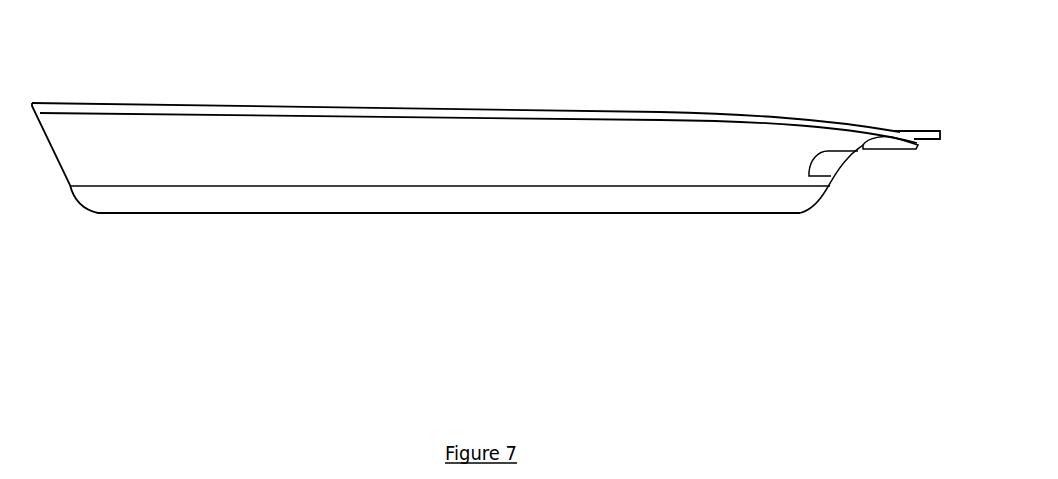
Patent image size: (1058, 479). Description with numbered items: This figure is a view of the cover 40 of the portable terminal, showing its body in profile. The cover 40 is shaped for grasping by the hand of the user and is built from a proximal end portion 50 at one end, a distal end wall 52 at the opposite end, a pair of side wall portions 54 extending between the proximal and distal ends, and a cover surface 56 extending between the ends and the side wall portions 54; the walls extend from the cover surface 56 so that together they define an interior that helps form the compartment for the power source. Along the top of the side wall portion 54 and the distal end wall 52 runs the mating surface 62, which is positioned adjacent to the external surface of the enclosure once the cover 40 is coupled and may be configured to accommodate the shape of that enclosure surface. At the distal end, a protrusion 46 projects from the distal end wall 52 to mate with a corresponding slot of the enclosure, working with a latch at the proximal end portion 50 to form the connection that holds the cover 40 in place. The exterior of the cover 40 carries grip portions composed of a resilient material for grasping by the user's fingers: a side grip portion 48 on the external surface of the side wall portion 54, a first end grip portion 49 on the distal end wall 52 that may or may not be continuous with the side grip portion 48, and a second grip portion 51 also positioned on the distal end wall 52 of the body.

The cover 40 is at (450, 235).
The protrusion 46 is at (925, 135).
The side grip portion 48 is at (583, 202).
The first end grip portion 49 is at (813, 200).
The proximal end portion 50 is at (78, 270).
The second grip portion 51 is at (892, 146).
The distal end wall 52 is at (838, 284).
The side wall portion 54 is at (431, 160).
The cover surface 56 is at (330, 215).
The mating surface 62 is at (485, 102).